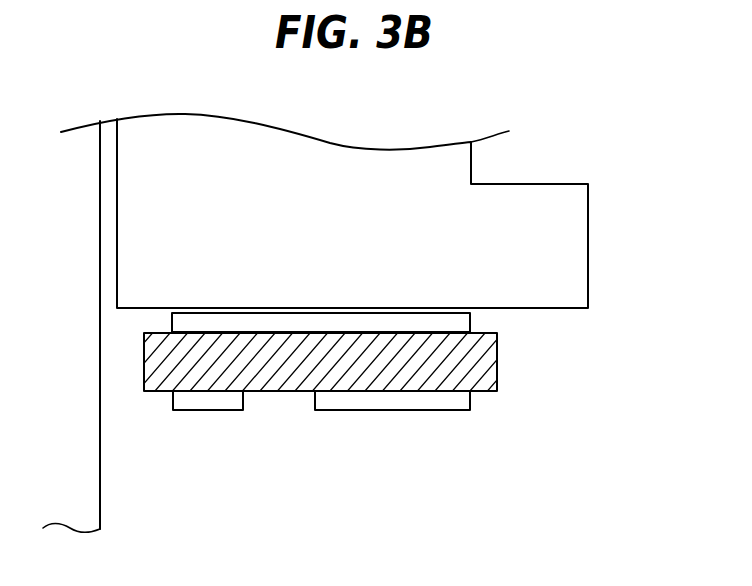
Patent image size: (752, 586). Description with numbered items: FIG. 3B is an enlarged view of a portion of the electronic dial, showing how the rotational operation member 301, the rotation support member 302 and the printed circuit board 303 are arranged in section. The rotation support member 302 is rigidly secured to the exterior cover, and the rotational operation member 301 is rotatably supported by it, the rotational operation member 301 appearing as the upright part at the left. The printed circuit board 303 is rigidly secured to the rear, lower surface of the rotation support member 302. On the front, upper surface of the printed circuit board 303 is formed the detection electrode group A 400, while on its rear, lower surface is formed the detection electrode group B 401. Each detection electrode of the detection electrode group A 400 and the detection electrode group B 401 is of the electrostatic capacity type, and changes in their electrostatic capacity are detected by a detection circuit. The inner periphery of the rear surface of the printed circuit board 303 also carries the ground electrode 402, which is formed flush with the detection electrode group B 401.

The rotational operation member 301 is at (88, 447).
The rotation support member 302 is at (568, 240).
The printed circuit board 303 is at (493, 376).
The detection electrode group A 400 is at (465, 322).
The detection electrode group B 401 is at (392, 410).
The ground electrode 402 is at (213, 410).